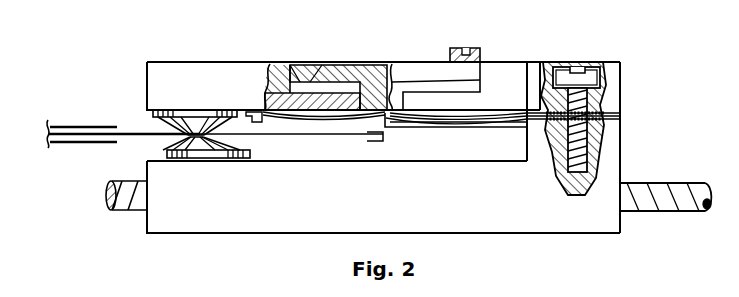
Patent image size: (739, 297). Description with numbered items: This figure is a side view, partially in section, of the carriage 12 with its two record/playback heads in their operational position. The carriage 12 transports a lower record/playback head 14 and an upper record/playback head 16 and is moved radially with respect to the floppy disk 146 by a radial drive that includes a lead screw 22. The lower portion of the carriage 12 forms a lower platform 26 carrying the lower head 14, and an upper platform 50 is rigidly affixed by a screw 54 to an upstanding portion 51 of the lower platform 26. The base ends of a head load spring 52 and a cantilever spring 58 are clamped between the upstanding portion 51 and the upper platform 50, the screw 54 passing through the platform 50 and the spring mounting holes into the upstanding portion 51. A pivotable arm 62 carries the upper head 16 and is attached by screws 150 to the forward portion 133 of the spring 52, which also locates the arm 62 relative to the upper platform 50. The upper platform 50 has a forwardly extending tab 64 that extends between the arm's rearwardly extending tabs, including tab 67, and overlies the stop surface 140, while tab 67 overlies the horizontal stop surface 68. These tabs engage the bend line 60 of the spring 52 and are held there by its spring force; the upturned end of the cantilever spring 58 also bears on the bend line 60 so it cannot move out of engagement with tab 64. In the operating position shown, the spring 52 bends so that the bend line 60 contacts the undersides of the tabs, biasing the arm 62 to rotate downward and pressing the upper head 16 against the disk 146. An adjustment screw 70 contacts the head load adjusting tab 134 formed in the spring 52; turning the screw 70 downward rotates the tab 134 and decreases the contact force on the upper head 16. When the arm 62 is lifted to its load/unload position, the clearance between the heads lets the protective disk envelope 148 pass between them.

The carriage 12 is at (142, 216).
The lower record/playback head 14 is at (176, 144).
The upper record/playback head 16 is at (147, 117).
The lead screw 22 is at (652, 183).
The lower platform 26 is at (622, 228).
The upper platform 50 is at (623, 75).
The upstanding portion 51 is at (165, 56).
The head load spring 52 is at (623, 113).
The screw 54 is at (587, 72).
The cantilever spring 58 is at (623, 121).
The bend line 60 is at (398, 63).
The pivotable arm 62 is at (222, 62).
The tab portion 64 is at (332, 62).
The rearwardly extending tab 67 is at (481, 56).
The horizontal stop surface 68 is at (482, 80).
The adjustment screw 70 is at (480, 62).
The forward portion 133 is at (313, 122).
The head load adjusting tab 134 is at (477, 124).
The stop surface 140 is at (281, 62).
The floppy disk 146 is at (147, 127).
The protective disk envelope 148 is at (62, 126).
The screws 150 is at (256, 62).